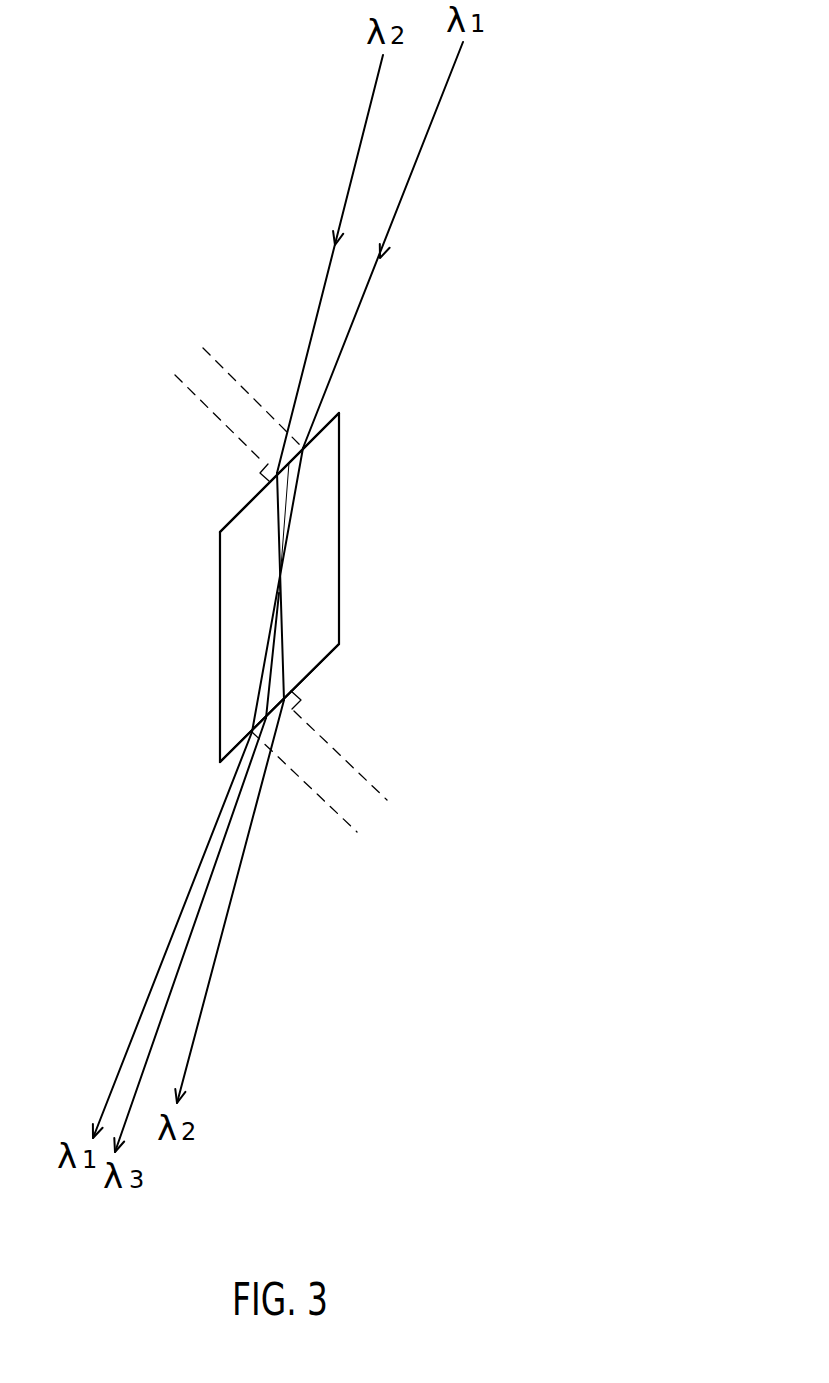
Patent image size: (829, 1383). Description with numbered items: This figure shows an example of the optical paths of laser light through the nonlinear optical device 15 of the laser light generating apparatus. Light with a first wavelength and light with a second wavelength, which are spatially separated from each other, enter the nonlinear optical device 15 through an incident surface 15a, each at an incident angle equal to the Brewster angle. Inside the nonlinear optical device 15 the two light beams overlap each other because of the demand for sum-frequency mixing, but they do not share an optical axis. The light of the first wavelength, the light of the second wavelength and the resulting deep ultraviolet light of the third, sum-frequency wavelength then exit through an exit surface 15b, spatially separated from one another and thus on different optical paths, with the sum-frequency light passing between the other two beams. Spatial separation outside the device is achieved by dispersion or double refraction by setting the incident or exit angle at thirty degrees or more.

The nonlinear optical device 15 is at (340, 484).
The incident surface 15a is at (223, 517).
The exit surface 15b is at (331, 658).